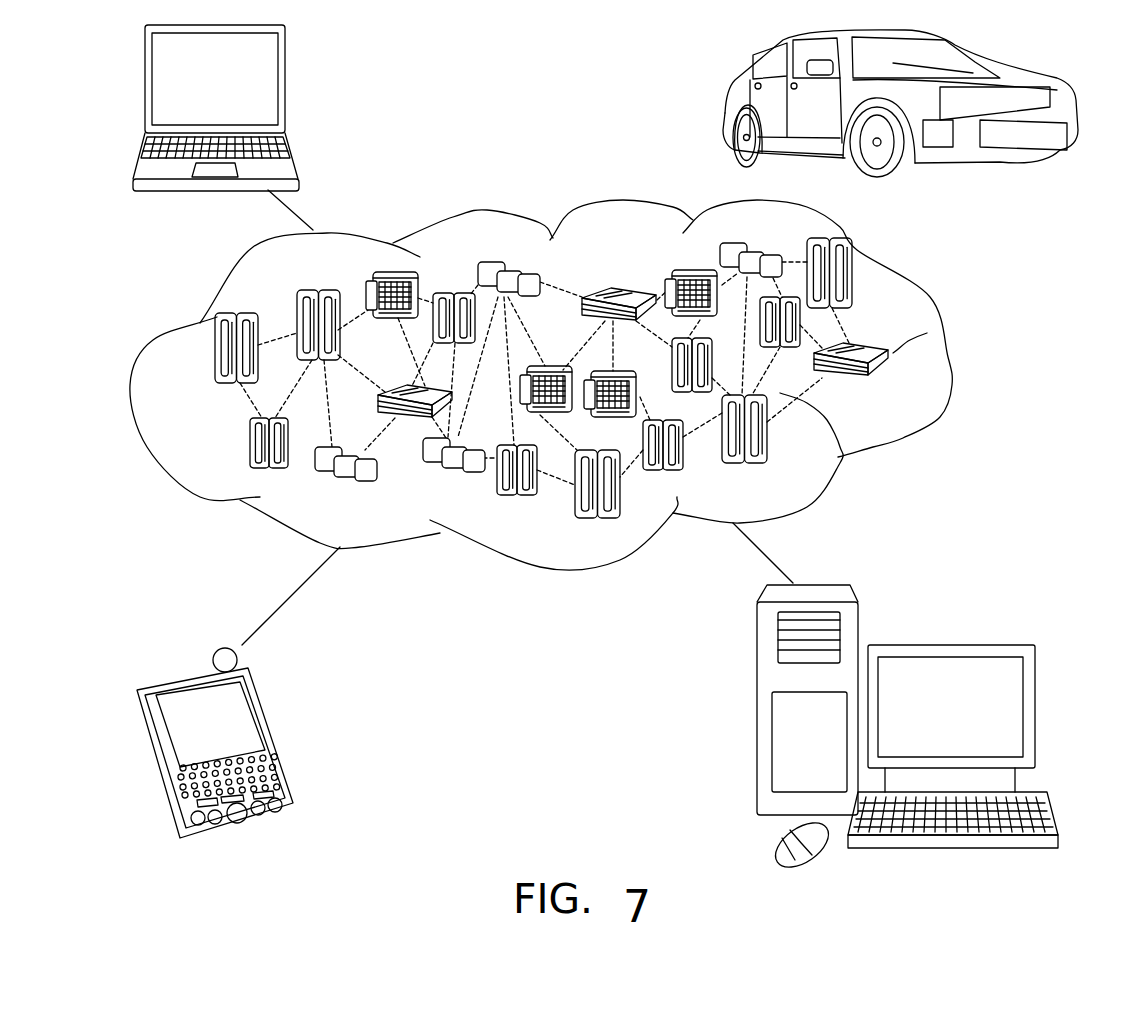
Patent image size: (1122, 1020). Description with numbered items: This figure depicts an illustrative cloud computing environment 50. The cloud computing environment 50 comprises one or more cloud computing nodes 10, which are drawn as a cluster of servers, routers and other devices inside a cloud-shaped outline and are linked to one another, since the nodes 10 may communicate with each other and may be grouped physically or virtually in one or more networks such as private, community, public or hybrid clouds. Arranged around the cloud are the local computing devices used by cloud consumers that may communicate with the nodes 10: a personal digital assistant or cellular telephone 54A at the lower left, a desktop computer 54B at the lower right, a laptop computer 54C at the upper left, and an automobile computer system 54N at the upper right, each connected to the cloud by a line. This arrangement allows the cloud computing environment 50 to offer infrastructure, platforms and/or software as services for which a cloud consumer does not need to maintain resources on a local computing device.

The cloud computing environment 50 is at (948, 357).
The cloud computing node 10 is at (900, 388).
The personal digital assistant or cellular telephone 54A is at (272, 738).
The desktop computer 54B is at (947, 643).
The laptop computer 54C is at (287, 88).
The automobile computer system 54N is at (725, 107).